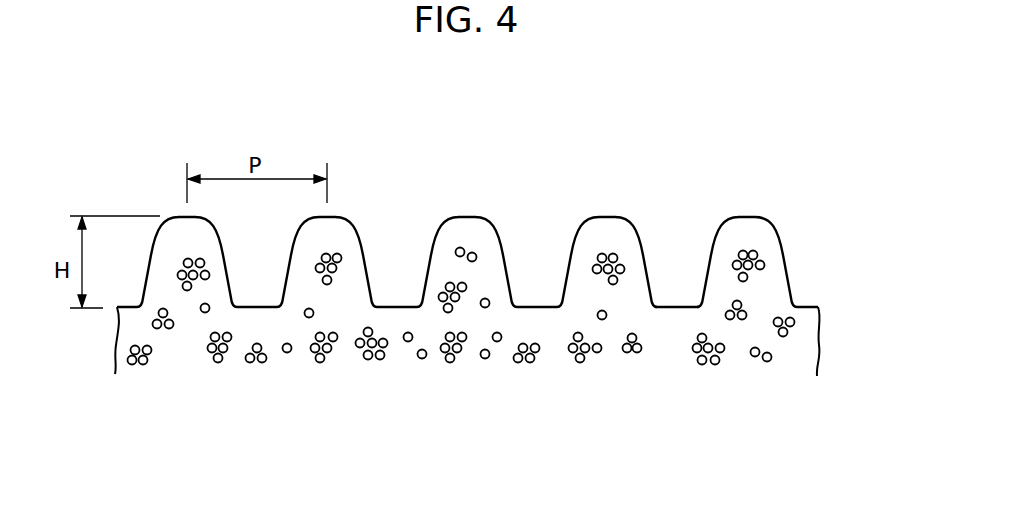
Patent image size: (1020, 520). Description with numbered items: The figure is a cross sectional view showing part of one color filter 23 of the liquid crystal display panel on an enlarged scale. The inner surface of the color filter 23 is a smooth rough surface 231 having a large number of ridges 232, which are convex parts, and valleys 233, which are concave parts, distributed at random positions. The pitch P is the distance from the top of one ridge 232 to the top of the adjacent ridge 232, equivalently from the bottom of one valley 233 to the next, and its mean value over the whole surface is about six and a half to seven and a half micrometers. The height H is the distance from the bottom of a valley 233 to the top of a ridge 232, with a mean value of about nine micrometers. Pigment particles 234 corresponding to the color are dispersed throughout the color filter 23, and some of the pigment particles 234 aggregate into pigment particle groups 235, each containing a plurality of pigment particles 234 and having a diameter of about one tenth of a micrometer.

The color filter 23 is at (819, 328).
The rough surface 231 is at (494, 158).
The ridge 232 is at (605, 217).
The valley 233 is at (674, 307).
The pigment particle 234 is at (486, 359).
The pigment particle group 235 is at (194, 384).